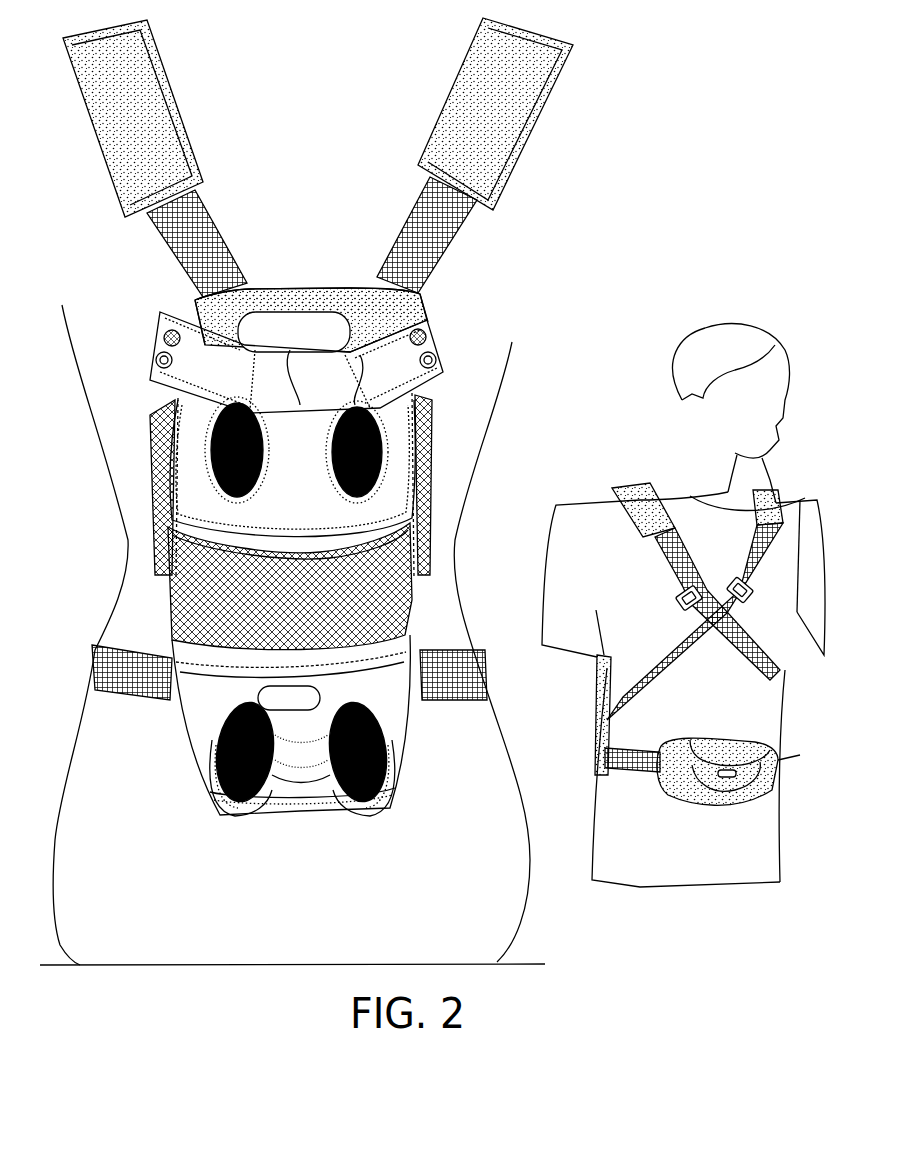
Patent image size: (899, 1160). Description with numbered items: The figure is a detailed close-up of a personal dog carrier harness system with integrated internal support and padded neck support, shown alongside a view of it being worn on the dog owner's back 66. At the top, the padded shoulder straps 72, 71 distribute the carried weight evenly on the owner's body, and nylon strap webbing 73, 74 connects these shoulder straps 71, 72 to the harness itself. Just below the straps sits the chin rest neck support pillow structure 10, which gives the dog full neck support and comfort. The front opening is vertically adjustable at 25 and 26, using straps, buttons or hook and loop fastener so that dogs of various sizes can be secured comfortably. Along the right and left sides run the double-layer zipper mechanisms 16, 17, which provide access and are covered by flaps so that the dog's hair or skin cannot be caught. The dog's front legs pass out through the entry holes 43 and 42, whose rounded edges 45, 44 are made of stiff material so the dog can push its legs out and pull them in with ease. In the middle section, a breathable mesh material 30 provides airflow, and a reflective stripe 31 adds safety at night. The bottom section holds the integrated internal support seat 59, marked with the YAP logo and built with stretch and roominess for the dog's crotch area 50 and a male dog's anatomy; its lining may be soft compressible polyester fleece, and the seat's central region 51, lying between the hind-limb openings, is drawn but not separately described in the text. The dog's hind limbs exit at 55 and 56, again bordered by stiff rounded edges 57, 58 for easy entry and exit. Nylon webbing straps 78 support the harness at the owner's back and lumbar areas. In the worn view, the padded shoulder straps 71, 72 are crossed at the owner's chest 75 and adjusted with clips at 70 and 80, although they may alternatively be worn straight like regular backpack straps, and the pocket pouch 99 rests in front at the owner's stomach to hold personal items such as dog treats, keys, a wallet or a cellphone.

The chin rest neck support pillow structure 10 is at (318, 335).
The double-layer zipper mechanism 16 is at (166, 413).
The double-layer zipper mechanism 17 is at (431, 400).
The front opening vertical adjustment mechanism 25 is at (150, 349).
The front opening vertical adjustment mechanism 26 is at (433, 343).
The breathable mesh material 30 is at (202, 573).
The reflective stripe 31 is at (386, 522).
The entry hole 42 is at (382, 437).
The entry hole 43 is at (208, 446).
The rounded edge 44 is at (392, 458).
The rounded edge 45 is at (202, 467).
The crotch area 50 is at (296, 813).
The crotch section 51 is at (286, 765).
The hind limb exit point 55 is at (206, 789).
The hind limb exit point 56 is at (378, 792).
The rounded edge 57 is at (226, 820).
The rounded edge 58 is at (363, 815).
The internal support seat 59 is at (236, 683).
The dog owner's back 66 is at (462, 900).
The clip 70 is at (685, 602).
The padded shoulder strap 71 is at (505, 108).
The padded shoulder strap 72 is at (120, 67).
The nylon strap webbing 73 is at (455, 242).
The nylon strap webbing 74 is at (167, 250).
The owner's chest 75 is at (732, 623).
The nylon webbing strap 78 is at (133, 702).
The clip 80 is at (757, 590).
The pocket pouch 99 is at (703, 807).